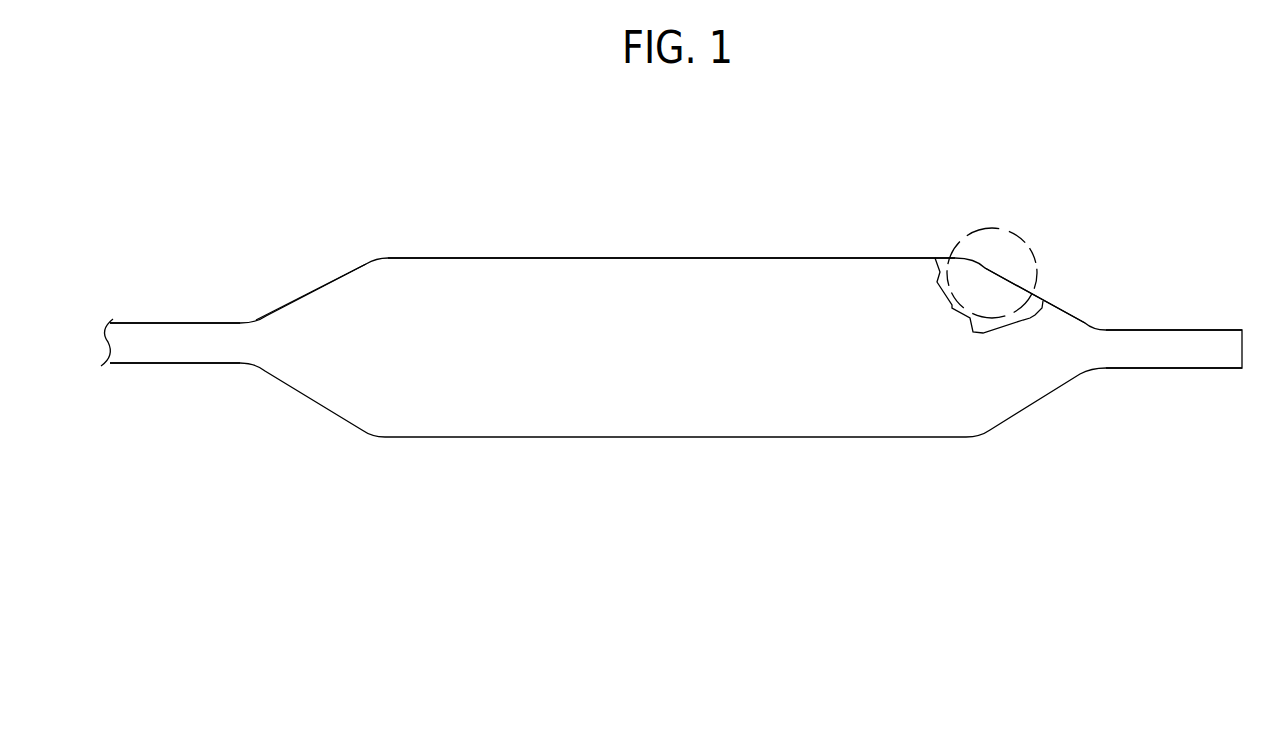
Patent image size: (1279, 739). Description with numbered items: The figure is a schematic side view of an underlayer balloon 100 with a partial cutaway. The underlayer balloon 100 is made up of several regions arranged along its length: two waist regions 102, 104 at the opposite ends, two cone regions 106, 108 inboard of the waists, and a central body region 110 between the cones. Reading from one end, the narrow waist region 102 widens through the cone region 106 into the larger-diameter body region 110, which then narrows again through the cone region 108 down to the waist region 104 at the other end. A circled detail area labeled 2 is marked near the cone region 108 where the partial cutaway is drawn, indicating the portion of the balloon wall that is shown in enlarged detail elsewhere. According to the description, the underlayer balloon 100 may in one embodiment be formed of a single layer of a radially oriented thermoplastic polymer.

The underlayer balloon 100 is at (684, 345).
The waist region 102 is at (175, 323).
The waist region 104 is at (1177, 330).
The cone region 106 is at (335, 278).
The cone region 108 is at (1060, 310).
The body region 110 is at (551, 257).
The detail region of FIG. 2 is at (1017, 235).